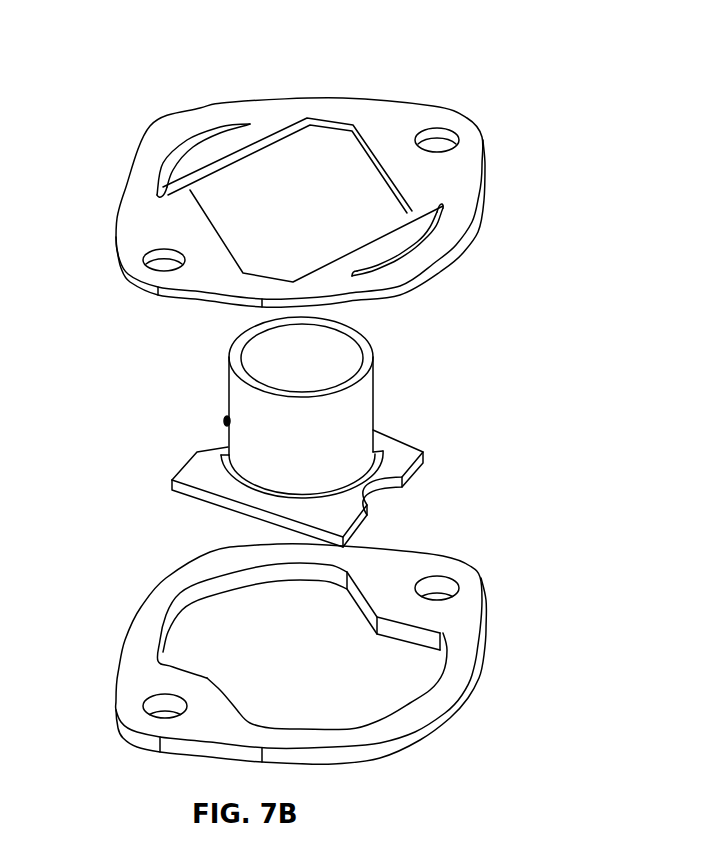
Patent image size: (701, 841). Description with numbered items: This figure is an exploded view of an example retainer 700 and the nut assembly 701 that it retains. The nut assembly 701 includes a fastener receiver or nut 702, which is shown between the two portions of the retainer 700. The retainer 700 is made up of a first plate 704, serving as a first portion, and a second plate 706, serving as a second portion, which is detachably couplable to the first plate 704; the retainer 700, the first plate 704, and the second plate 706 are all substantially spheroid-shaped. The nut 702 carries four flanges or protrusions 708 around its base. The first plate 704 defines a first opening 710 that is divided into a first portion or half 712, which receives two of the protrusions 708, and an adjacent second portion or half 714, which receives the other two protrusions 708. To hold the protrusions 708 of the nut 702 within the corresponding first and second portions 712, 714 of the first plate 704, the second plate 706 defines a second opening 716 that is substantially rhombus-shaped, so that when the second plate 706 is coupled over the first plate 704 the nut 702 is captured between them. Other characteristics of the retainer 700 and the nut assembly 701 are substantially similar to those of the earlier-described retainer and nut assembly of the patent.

The retainer 700 is at (513, 78).
The nut assembly 701 is at (398, 340).
The nut 702 is at (373, 398).
The first plate 704 is at (128, 692).
The second plate 706 is at (133, 227).
The protrusions 708 is at (227, 423).
The first opening 710 is at (277, 643).
The first portion 712 is at (187, 660).
The second portion 714 is at (388, 683).
The second opening 716 is at (302, 163).